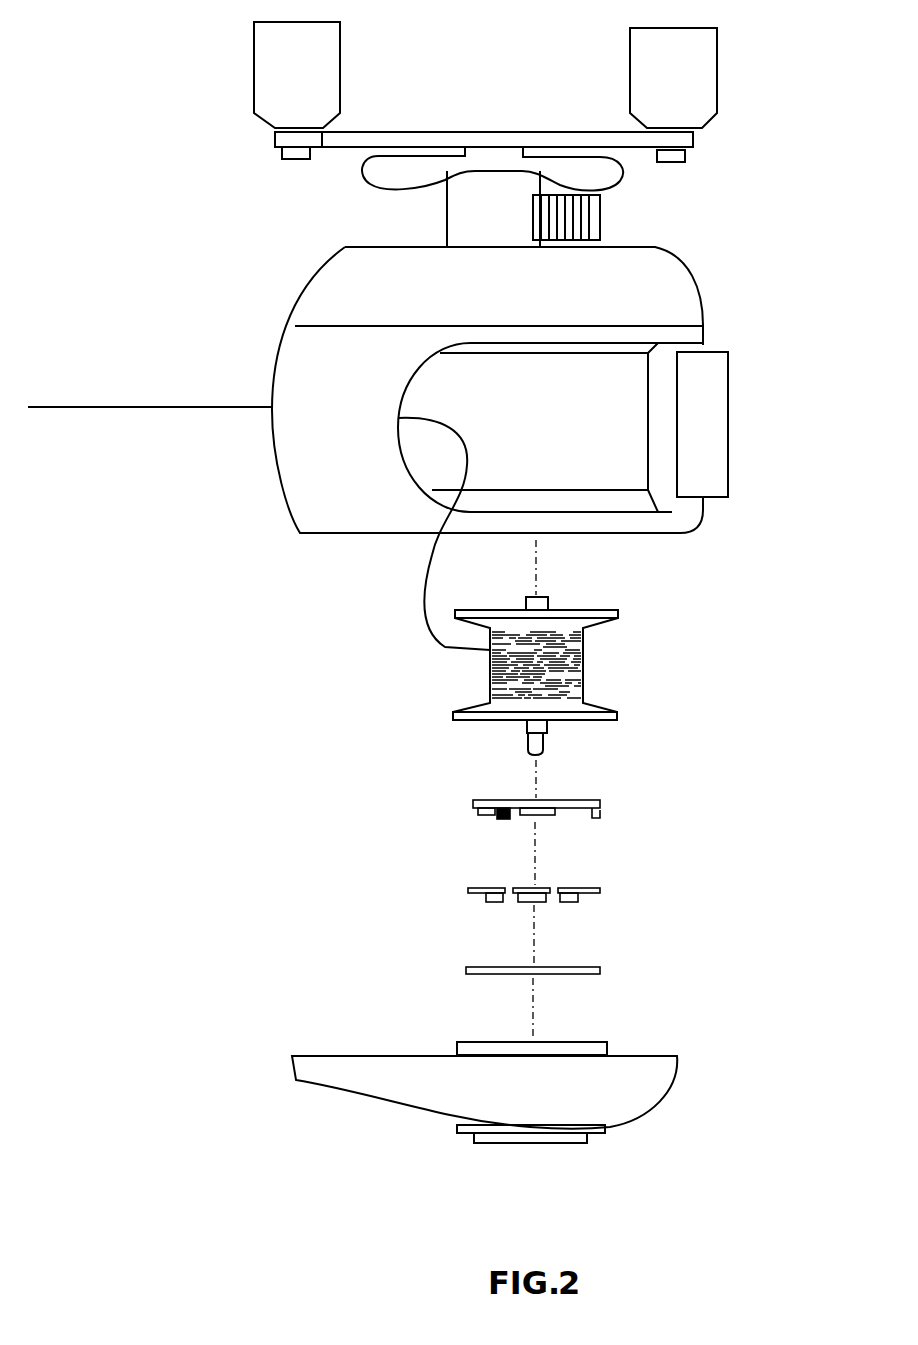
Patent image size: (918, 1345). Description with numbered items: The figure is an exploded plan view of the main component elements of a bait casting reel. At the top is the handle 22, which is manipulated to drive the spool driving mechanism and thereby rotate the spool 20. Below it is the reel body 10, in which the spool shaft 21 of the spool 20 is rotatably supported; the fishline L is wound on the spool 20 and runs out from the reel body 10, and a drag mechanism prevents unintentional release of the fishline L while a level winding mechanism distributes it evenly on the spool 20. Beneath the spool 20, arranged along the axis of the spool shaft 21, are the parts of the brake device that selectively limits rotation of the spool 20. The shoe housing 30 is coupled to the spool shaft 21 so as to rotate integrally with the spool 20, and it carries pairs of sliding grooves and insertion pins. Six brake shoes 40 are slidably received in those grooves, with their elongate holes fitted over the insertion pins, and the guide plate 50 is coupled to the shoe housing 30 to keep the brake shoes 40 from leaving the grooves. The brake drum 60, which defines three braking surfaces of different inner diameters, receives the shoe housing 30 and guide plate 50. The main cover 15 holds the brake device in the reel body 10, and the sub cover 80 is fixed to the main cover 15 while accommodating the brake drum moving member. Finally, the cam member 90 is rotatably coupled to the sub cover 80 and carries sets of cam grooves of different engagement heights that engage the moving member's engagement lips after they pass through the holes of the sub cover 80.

The handle 22 is at (706, 62).
The reel body 10 is at (660, 290).
The fishline L is at (93, 409).
The spool 20 is at (610, 668).
The spool shaft 21 is at (538, 728).
The shoe housing 30 is at (610, 807).
The brake shoes 40 is at (610, 895).
The guide plate 50 is at (610, 972).
The brake drum 60 is at (600, 1052).
The main cover 15 is at (633, 1092).
The sub cover 80 is at (605, 1128).
The cam member 90 is at (570, 1143).